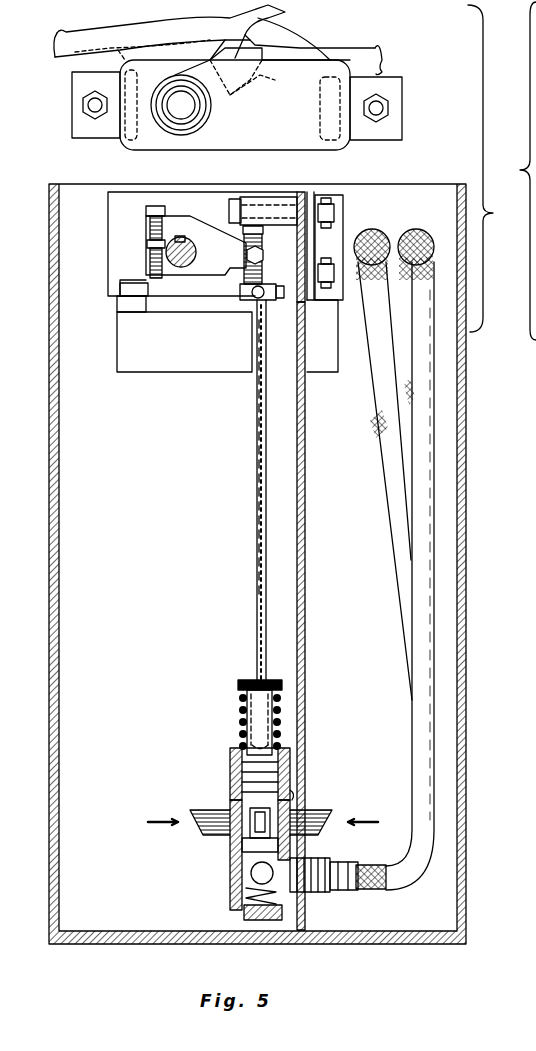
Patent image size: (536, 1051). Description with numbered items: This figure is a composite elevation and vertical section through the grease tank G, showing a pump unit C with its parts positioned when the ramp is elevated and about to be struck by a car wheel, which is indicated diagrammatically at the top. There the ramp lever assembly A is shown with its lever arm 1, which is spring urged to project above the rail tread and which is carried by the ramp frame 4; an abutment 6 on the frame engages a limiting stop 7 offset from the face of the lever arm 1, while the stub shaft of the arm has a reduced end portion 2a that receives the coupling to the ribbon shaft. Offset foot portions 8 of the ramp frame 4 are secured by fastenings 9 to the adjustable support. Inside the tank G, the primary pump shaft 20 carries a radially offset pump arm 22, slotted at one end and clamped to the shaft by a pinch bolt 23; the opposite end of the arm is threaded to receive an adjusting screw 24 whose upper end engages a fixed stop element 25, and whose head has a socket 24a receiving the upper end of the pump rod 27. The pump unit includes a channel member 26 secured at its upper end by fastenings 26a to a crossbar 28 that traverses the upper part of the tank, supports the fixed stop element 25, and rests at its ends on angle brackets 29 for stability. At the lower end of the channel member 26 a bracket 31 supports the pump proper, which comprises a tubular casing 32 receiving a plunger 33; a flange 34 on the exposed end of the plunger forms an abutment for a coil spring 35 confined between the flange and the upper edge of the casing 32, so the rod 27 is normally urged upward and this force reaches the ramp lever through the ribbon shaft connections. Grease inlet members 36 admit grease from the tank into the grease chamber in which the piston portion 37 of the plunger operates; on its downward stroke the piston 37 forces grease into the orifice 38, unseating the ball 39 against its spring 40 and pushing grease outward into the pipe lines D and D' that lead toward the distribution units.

The lever arm 1 is at (272, 24).
The reduced end portion 2a is at (190, 112).
The ramp frame 4 is at (310, 60).
The abutment 6 is at (222, 42).
The limiting stop 7 is at (262, 74).
The offset foot portions 8 is at (392, 76).
The fastenings 9 is at (380, 120).
The primary pump shaft 20 is at (192, 240).
The pump arms 22 is at (196, 300).
The pinch bolt 23 is at (158, 206).
The adjusting screw 24 is at (246, 232).
The socket 24a is at (250, 302).
The fixed stop element 25 is at (272, 197).
The channel member 26 is at (306, 525).
The fastenings 26a is at (336, 212).
The pump rod 27 is at (256, 524).
The crossbar 28 is at (303, 197).
The angle brackets 29 is at (178, 372).
The bracket 31 is at (296, 802).
The tubular casing 32 is at (230, 762).
The plunger 33 is at (240, 726).
The flange 34 is at (244, 680).
The coil spring 35 is at (243, 704).
The grease inlet members 36 is at (192, 818).
The piston portion 37 is at (252, 812).
The orifice 38 is at (242, 850).
The ball 39 is at (250, 874).
The spring 40 is at (244, 895).
The ramp lever A is at (402, 96).
The pump units C is at (254, 480).
The pipe or flexible tubing D is at (366, 569).
The pipe or flexible tubing D' is at (379, 464).
The grease tank G is at (466, 535).